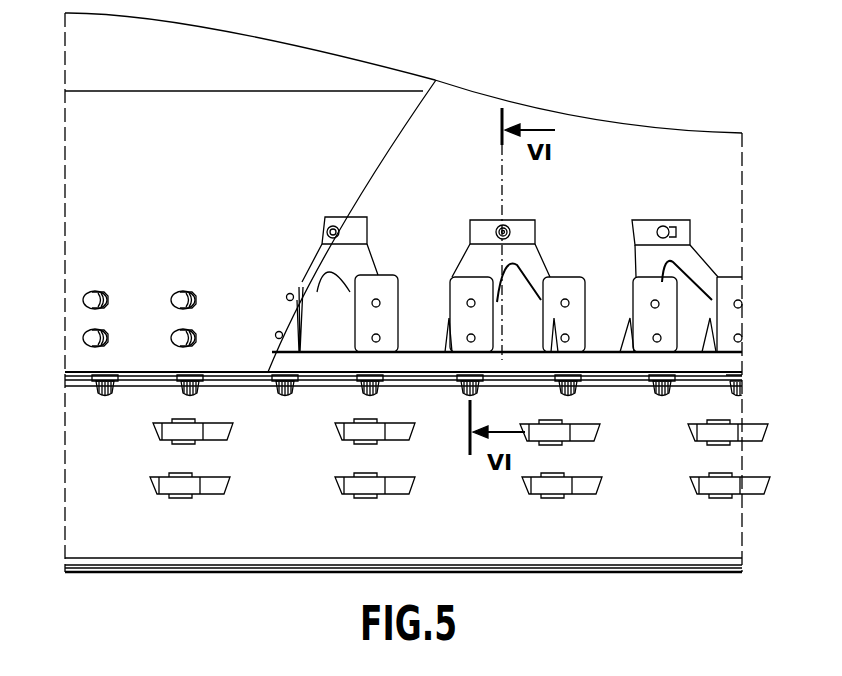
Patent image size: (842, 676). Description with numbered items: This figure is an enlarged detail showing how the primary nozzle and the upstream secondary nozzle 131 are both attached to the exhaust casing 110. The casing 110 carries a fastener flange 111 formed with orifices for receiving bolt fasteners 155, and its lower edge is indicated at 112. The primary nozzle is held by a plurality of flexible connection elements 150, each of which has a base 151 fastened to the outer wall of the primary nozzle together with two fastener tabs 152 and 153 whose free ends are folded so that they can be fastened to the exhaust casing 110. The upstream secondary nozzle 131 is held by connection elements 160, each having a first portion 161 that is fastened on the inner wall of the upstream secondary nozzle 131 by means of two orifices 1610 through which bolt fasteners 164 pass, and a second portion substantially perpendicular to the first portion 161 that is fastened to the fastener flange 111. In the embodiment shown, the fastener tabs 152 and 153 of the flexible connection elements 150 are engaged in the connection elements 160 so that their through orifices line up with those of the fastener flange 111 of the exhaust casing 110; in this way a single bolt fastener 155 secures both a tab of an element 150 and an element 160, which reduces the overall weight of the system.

The exhaust casing 110 is at (692, 534).
The fastener flange 111 is at (698, 378).
The lower edge of base plate 112 is at (655, 568).
The upstream secondary nozzle 131 is at (108, 177).
The flexible connection element 150 is at (368, 262).
The base 151 is at (358, 227).
The fastener tab 152 is at (310, 268).
The fastener tab 153 is at (352, 262).
The bolt fasteners 155 is at (370, 392).
The connection element 160 is at (537, 271).
The first portion 161 is at (557, 322).
The orifices 1610 is at (568, 334).
The bolt fasteners 164 is at (172, 338).